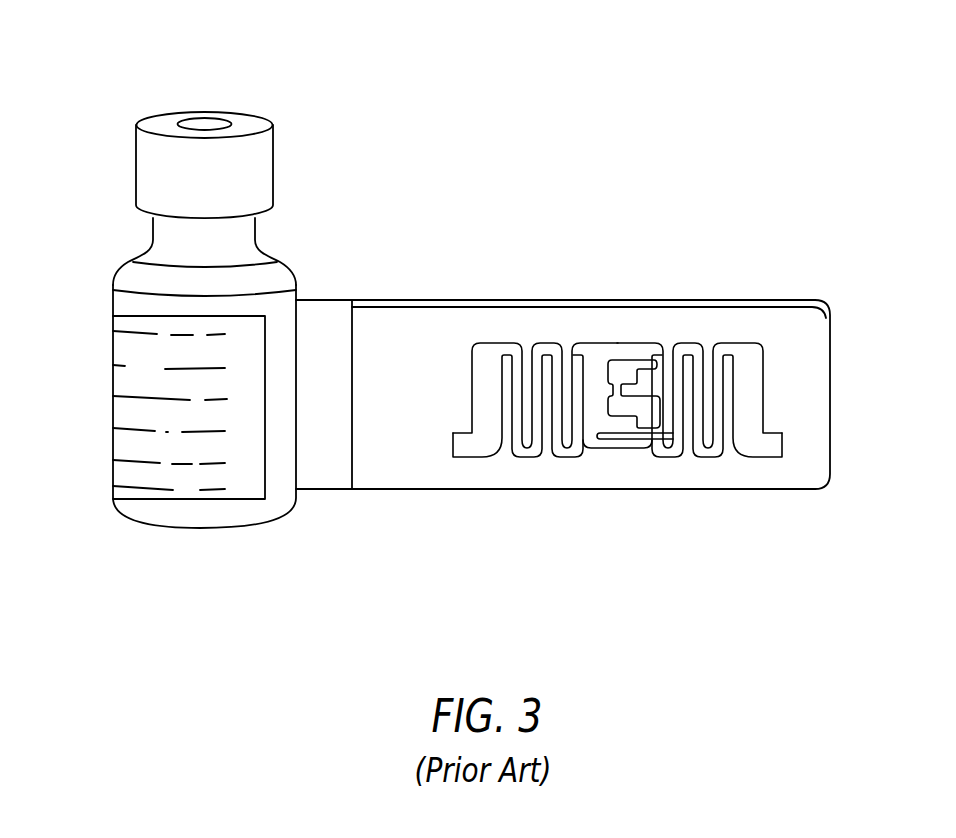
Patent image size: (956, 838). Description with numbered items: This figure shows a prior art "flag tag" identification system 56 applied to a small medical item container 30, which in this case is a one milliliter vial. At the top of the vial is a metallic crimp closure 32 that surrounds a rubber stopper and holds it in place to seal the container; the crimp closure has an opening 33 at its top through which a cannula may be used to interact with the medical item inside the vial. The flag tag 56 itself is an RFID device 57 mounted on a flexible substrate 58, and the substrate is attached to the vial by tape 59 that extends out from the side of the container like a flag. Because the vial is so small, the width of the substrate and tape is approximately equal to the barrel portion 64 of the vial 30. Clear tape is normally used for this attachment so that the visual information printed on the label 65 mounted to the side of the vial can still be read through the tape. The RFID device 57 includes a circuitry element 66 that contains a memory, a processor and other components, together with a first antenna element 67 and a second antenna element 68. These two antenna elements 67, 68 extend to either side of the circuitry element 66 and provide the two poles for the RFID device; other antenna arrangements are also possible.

The medical item container 30 is at (96, 263).
The metallic crimp closure 32 is at (135, 162).
The opening 33 is at (205, 118).
The flag tag identification system 56 is at (640, 138).
The RFID device 57 is at (665, 312).
The substrate 58 is at (830, 337).
The tape 59 is at (327, 300).
The barrel portion 64 is at (98, 310).
The label 65 is at (188, 500).
The circuitry element 66 is at (628, 436).
The first antenna element 67 is at (526, 448).
The second antenna element 68 is at (767, 460).